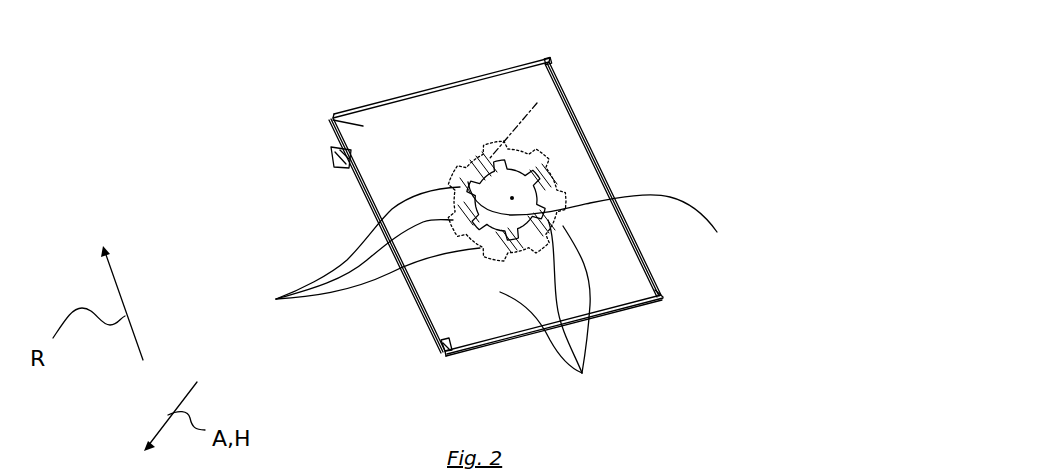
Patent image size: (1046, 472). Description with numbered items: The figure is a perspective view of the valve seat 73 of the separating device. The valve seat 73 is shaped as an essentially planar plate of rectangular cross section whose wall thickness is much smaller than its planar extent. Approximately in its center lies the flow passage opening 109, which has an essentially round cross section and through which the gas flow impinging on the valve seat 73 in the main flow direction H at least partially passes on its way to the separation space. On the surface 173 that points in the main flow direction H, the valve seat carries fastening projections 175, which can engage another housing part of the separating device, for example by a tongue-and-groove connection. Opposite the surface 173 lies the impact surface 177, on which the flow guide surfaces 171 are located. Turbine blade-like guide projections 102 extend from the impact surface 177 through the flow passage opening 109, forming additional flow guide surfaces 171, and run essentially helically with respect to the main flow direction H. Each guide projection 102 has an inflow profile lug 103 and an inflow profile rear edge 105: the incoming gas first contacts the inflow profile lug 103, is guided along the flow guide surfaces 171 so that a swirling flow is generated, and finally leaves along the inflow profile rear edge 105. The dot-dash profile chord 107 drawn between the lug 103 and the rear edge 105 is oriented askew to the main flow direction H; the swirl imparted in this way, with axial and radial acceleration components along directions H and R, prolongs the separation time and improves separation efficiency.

The valve seat 73 is at (394, 78).
The impact surface 177 is at (332, 118).
The fastening projections 175 is at (332, 153).
The surface 173 is at (362, 188).
The flow guide surfaces 171 is at (554, 313).
The turbine blade-like guide projections 102 is at (354, 253).
The inflow profile lug 103 is at (497, 163).
The inflow profile rear edge 105 is at (618, 215).
The axis 107 is at (538, 121).
The flow passage opening 109 is at (516, 196).